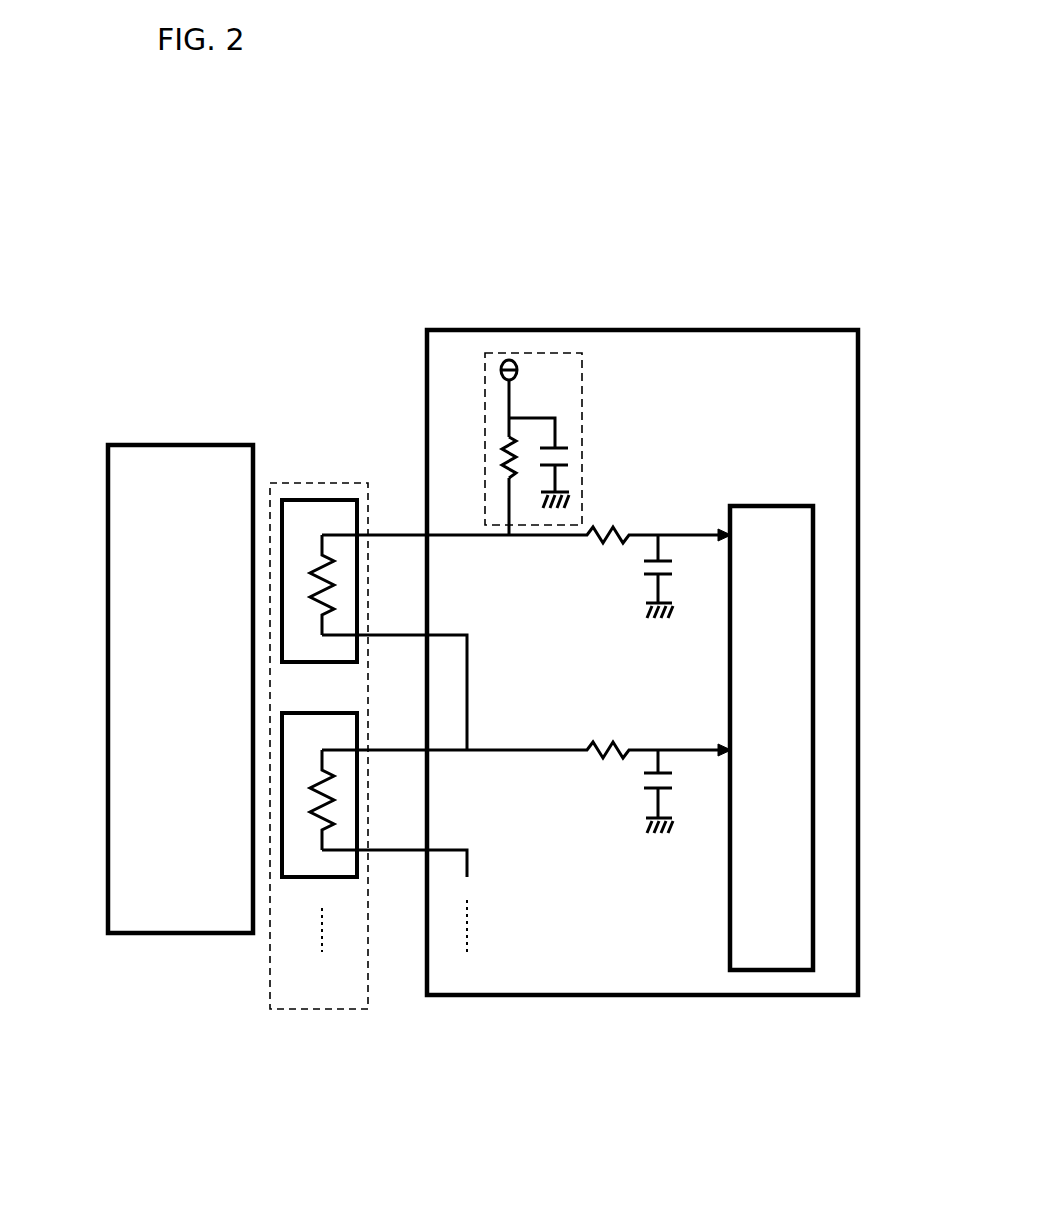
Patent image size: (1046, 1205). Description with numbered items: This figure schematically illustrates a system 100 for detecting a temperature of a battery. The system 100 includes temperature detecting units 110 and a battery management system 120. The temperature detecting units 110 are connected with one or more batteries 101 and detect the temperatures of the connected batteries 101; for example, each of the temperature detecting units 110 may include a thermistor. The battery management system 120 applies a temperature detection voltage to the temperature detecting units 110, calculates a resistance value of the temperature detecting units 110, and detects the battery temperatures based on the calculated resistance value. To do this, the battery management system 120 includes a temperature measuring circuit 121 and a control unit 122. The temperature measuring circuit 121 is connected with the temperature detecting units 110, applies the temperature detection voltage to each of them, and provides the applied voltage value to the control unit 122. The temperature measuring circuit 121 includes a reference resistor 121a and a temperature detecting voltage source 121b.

The system for detecting a temperature of a battery 100 is at (99, 333).
The battery 101 is at (185, 935).
The temperature detecting units 110 is at (272, 690).
The battery management system (BMS) 120 is at (858, 443).
The temperature measuring circuit 121 is at (583, 404).
The reference resistor 121a is at (506, 441).
The temperature detecting voltage source 121b is at (509, 358).
The control unit 122 is at (815, 595).